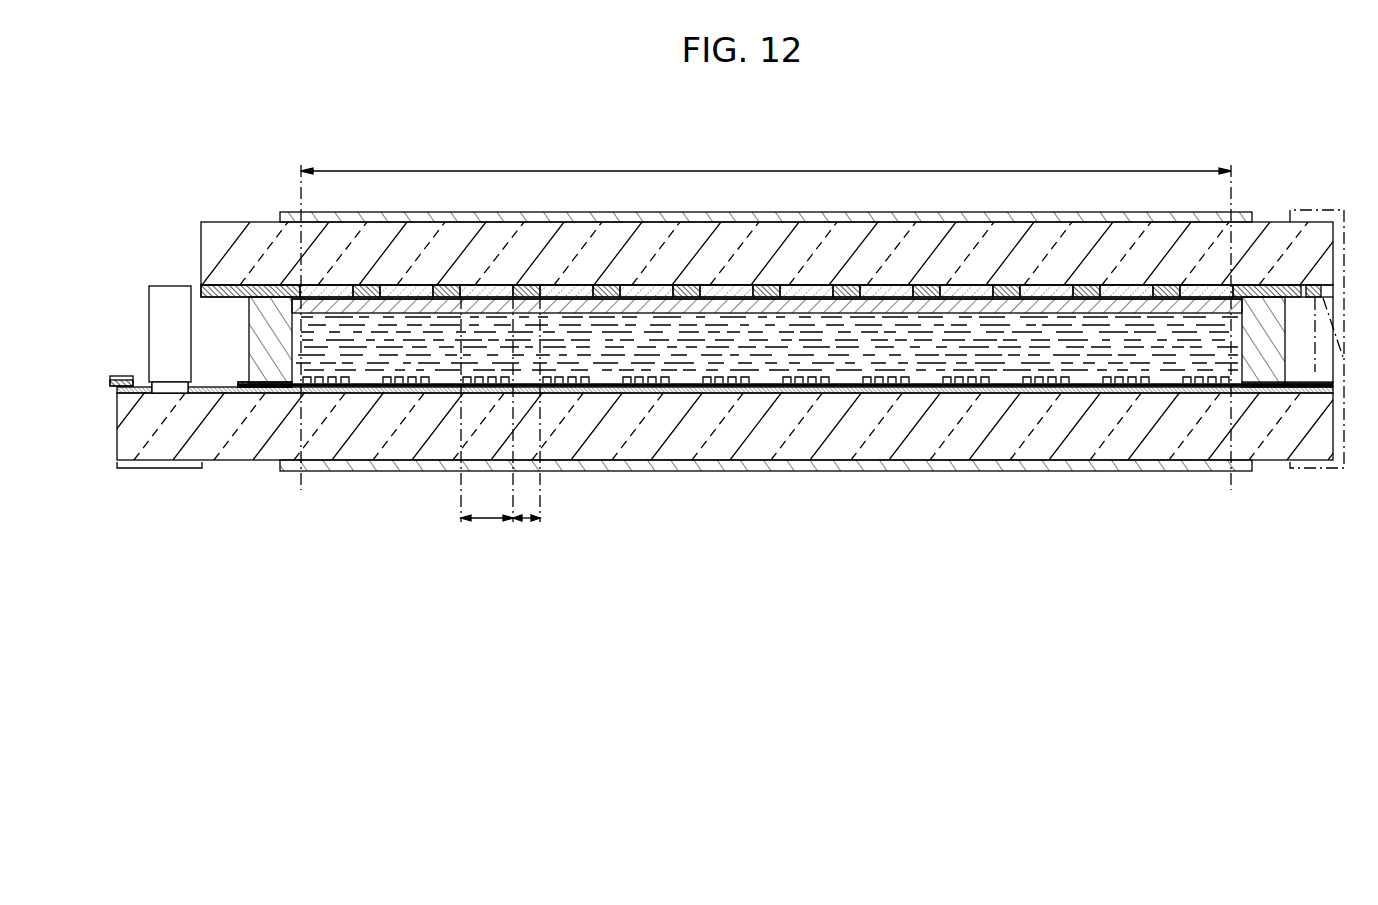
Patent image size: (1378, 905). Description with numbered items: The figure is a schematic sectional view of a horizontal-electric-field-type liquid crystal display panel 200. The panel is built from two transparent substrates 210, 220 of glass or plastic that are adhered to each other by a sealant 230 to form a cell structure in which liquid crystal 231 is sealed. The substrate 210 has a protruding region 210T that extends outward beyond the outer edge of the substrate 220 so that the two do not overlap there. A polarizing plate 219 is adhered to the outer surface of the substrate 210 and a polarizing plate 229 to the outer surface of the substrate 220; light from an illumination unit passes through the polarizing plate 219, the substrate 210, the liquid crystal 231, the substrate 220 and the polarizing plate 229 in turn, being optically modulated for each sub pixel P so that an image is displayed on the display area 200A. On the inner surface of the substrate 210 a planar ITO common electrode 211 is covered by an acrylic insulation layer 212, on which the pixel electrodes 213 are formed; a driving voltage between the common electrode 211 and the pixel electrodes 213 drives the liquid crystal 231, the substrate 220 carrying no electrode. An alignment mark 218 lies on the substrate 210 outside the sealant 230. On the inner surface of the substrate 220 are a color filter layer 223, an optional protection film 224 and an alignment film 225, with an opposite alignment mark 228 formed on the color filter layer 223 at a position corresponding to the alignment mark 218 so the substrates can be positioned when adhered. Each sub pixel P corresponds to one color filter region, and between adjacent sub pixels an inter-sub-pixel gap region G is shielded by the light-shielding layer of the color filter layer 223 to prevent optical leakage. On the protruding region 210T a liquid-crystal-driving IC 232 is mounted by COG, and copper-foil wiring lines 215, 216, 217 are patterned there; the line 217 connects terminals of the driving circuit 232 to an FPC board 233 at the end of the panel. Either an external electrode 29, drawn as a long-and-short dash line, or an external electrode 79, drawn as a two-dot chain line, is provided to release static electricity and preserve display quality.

The liquid crystal display panel 200 is at (561, 94).
The display area 200A is at (766, 318).
The polarizing plate 229 is at (1050, 215).
The substrate 220 is at (975, 255).
The color filter layer 223 is at (886, 292).
The alignment mark 228 is at (1306, 288).
The protection film 224 is at (802, 298).
The alignment film 225 is at (735, 305).
The liquid crystal 231 is at (1100, 335).
The sealant 230 is at (1254, 365).
The pixel electrode 213 is at (621, 385).
The insulation layer 212 is at (753, 388).
The wiring line 215 is at (219, 393).
The wiring line 216 is at (265, 384).
The alignment mark 218 is at (1312, 392).
The common electrode 211 is at (768, 394).
The substrate 210 is at (1068, 445).
The polarizing plate 219 is at (980, 472).
The protruding region 210T is at (157, 470).
The wiring line 217 is at (127, 390).
The driving circuit 232 is at (170, 286).
The FPC board 233 is at (120, 376).
The external electrode 79 is at (1323, 209).
The external electrode 29 is at (1302, 470).
The sub pixel P is at (487, 424).
The inter-sub-pixel gap region G is at (526, 424).